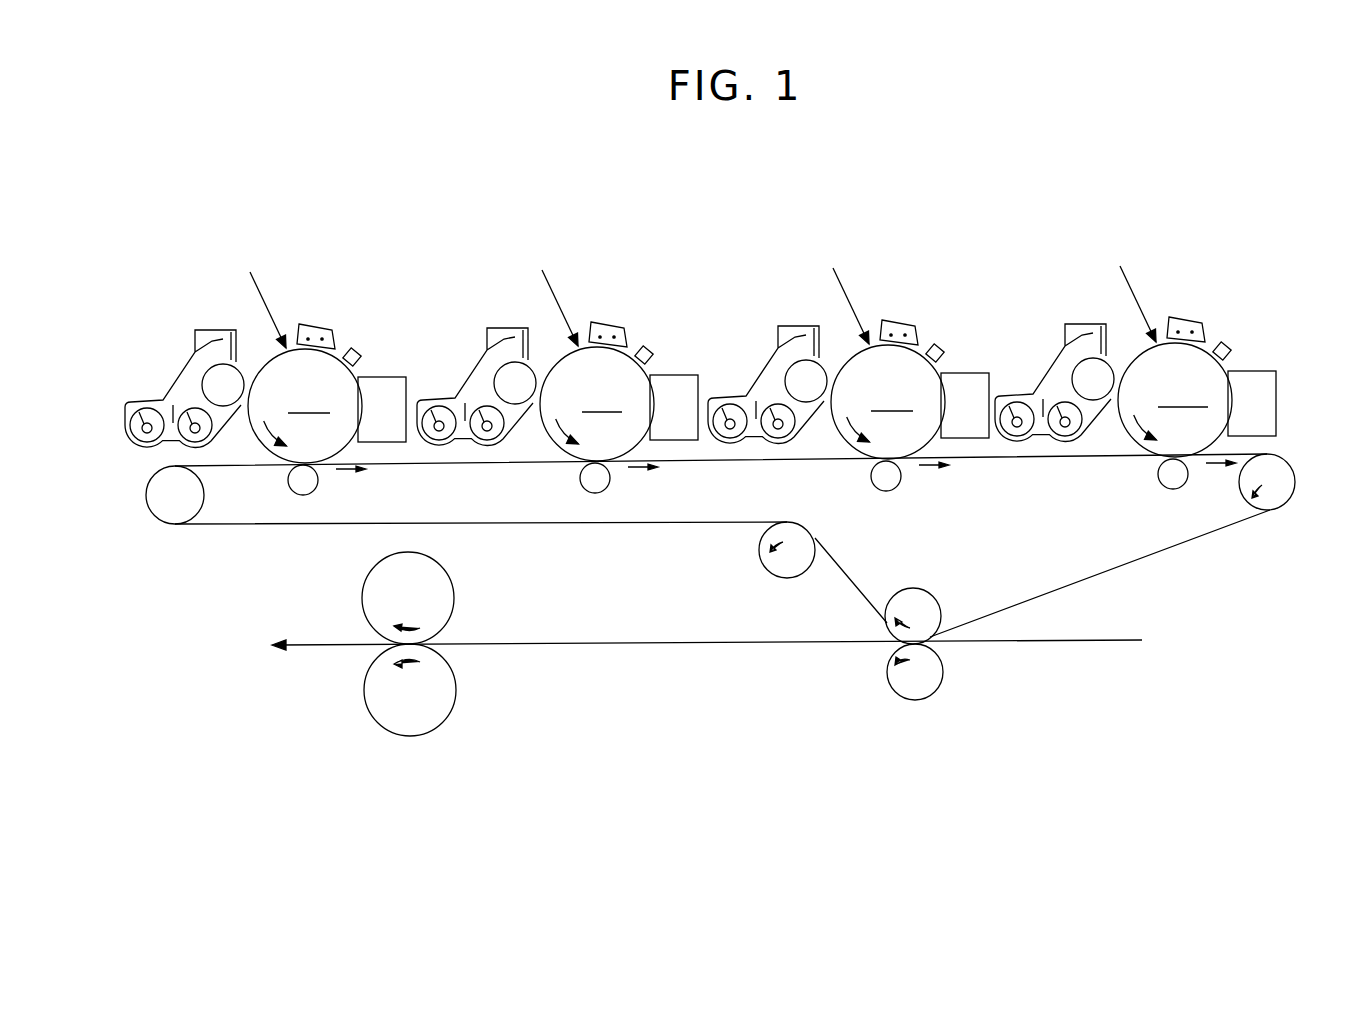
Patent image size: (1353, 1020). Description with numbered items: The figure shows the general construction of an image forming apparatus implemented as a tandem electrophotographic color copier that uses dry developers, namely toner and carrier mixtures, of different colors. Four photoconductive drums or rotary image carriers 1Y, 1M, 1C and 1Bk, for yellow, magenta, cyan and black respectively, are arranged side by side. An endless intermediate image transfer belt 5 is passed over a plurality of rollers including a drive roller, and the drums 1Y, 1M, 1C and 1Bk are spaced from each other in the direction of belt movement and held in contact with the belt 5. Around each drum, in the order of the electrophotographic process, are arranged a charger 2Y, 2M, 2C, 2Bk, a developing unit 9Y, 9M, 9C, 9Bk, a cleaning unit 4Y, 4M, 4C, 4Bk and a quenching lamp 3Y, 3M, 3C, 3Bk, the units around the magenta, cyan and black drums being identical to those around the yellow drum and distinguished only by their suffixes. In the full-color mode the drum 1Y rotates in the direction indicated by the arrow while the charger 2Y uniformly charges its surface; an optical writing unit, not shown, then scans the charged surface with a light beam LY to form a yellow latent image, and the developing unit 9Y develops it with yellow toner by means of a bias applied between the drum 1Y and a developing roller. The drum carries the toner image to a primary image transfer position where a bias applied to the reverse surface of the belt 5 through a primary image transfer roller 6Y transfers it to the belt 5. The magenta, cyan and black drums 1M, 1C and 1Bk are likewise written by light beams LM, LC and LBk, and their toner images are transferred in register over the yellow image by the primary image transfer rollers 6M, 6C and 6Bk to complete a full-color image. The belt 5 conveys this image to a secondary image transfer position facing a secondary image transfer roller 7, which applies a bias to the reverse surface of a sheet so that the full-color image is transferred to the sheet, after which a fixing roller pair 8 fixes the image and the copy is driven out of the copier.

The photoconductive drum 1Y is at (305, 406).
The photoconductive drum 1M is at (597, 404).
The photoconductive drum 1C is at (888, 402).
The photoconductive drum 1Bk is at (1175, 400).
The charger 2Y is at (316, 324).
The charger 2M is at (629, 298).
The charger 2C is at (912, 297).
The charger 2Bk is at (1209, 295).
The quenching lamp 3Y is at (357, 350).
The quenching lamp 3M is at (669, 325).
The quenching lamp 3C is at (957, 322).
The quenching lamp 3Bk is at (1252, 319).
The cleaning unit 4Y is at (390, 377).
The cleaning unit 4M is at (696, 377).
The cleaning unit 4C is at (980, 375).
The cleaning unit 4Bk is at (1278, 373).
The intermediate image transfer belt 5 is at (1182, 548).
The primary image transfer roller 6Y is at (289, 478).
The primary image transfer roller 6M is at (563, 481).
The primary image transfer roller 6C is at (857, 480).
The primary image transfer roller 6Bk is at (1142, 478).
The secondary image transfer roller 7 is at (943, 673).
The fixing roller pair 8 is at (458, 697).
The developing unit 9Y is at (203, 330).
The developing unit 9M is at (476, 344).
The developing unit 9C is at (767, 342).
The developing unit 9Bk is at (1054, 340).
The light beam LY is at (254, 280).
The light beam LM is at (577, 277).
The light beam LC is at (863, 274).
The light beam LBk is at (1158, 273).